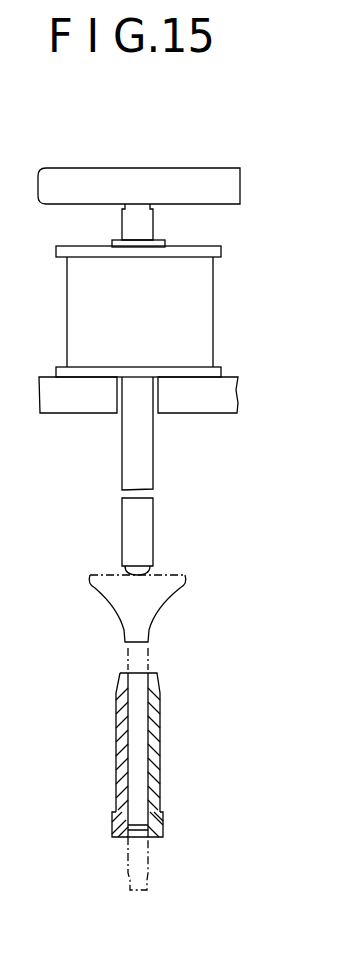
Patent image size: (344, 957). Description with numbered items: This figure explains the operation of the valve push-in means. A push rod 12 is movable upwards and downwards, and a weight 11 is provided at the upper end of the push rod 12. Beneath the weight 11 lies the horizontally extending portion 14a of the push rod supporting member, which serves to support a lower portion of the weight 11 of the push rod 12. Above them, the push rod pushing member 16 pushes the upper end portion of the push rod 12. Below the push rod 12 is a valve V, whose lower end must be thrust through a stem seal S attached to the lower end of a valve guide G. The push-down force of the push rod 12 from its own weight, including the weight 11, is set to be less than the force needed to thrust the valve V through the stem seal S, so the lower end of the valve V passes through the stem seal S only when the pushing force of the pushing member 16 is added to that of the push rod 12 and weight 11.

The push rod pushing member 16 is at (74, 185).
The weight 11 is at (83, 308).
The horizontally extending portion 14a is at (63, 394).
The push rod 12 is at (142, 522).
The valve V is at (132, 618).
The valve guide G is at (150, 712).
The stem seal S is at (113, 827).